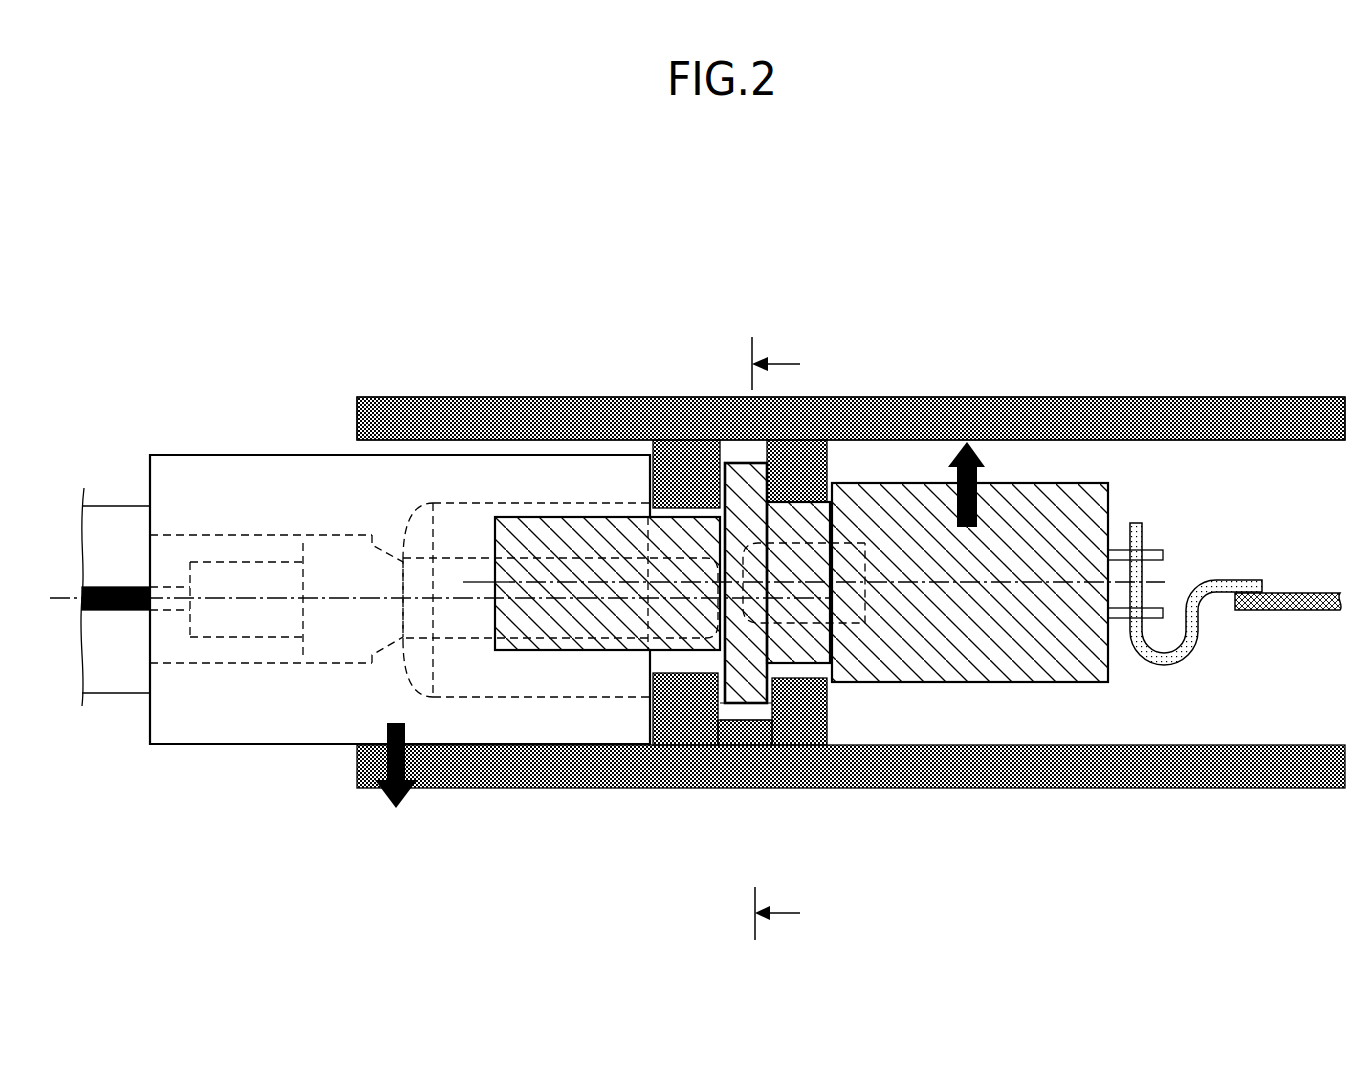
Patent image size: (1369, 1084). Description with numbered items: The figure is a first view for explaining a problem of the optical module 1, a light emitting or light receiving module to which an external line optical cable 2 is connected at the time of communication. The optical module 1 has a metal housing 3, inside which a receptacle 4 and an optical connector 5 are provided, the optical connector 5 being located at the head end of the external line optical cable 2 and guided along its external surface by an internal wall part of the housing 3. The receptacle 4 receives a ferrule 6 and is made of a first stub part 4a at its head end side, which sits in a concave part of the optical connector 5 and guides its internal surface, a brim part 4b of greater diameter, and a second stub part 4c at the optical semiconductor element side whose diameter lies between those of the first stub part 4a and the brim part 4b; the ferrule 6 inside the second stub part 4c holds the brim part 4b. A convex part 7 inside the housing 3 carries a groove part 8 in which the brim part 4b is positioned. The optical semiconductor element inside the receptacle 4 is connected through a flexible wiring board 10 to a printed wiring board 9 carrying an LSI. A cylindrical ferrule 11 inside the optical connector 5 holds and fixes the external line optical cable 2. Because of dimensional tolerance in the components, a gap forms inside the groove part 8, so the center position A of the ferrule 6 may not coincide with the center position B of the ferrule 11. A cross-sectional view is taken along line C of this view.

The optical module 1 is at (672, 397).
The external line optical cable 2 is at (117, 505).
The housing 3 is at (1013, 397).
The receptacle 4 is at (965, 682).
The first stub part 4a is at (587, 643).
The brim part 4b is at (745, 692).
The second stub part 4c is at (813, 645).
The optical connector 5 is at (247, 708).
The ferrule 6 is at (860, 543).
The convex part 7 is at (687, 490).
The groove part 8 is at (753, 720).
The printed wiring board 9 is at (1300, 593).
The flexible wiring board 10 is at (1222, 580).
The ferrule 11 is at (577, 557).
The center position of the ferrule A is at (488, 582).
The center position of the ferrule B is at (482, 600).
The line C- C is at (776, 637).